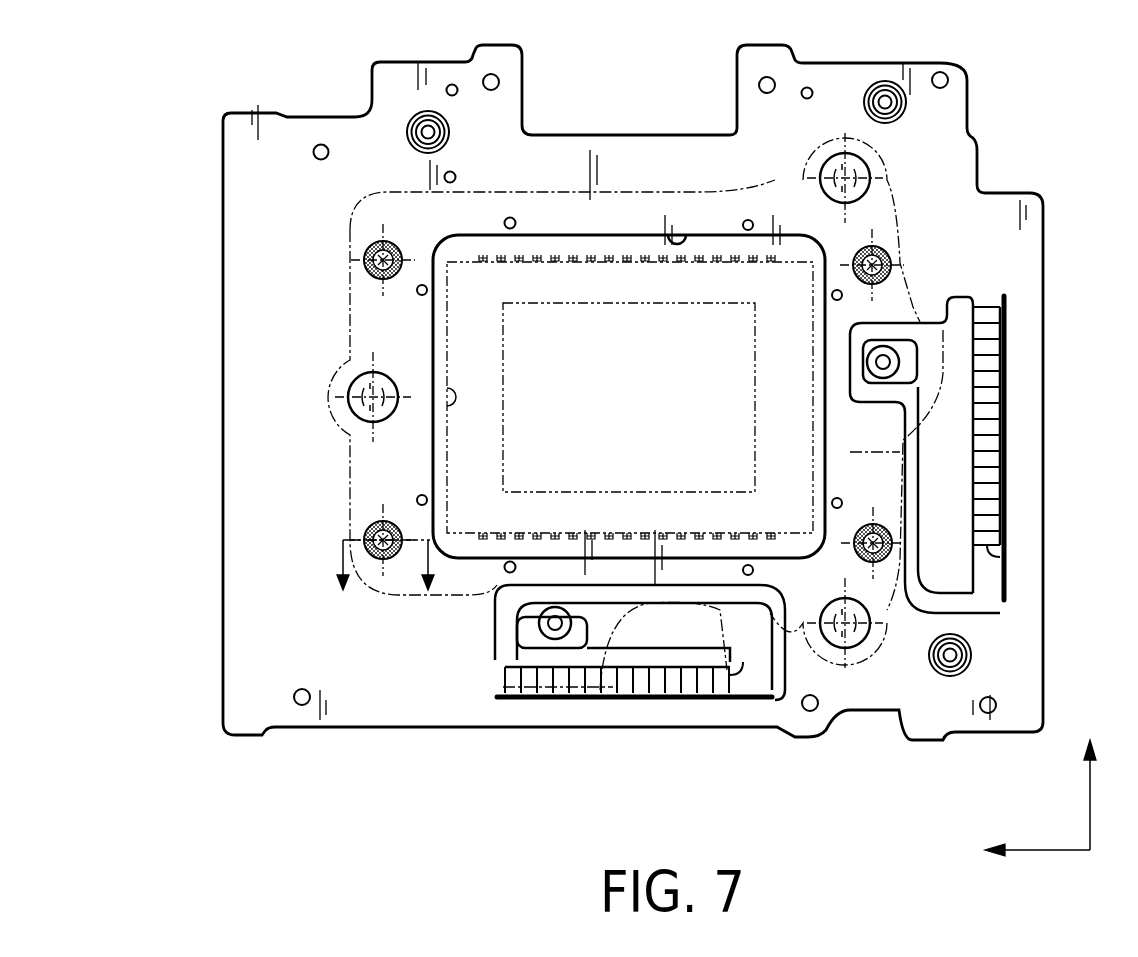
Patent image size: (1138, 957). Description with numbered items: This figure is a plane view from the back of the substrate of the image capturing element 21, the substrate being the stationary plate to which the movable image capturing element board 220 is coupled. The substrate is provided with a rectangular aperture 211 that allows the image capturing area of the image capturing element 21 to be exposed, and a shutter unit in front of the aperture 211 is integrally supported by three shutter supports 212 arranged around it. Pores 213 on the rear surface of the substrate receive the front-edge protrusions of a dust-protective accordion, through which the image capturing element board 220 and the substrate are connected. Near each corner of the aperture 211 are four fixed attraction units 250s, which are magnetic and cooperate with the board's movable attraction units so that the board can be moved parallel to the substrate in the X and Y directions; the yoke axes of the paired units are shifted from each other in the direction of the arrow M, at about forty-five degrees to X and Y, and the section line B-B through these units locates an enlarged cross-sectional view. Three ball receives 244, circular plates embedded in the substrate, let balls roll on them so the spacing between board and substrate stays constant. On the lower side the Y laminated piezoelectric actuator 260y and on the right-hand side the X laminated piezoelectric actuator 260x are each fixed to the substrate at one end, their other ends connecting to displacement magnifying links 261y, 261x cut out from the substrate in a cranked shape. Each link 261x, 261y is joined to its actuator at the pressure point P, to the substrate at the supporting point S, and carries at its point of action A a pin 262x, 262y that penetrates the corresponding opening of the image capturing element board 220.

The image capturing element 21 is at (620, 273).
The rectangular aperture 211 is at (683, 240).
The shutter supports 212 is at (420, 112).
The pores 213 is at (510, 218).
The image capturing element board 220 is at (400, 598).
The ball receive 244 is at (825, 180).
The fixed attraction units 250s is at (358, 276).
The X laminated piezoelectric actuator 260x is at (988, 448).
The displacement magnifying link 261x is at (993, 370).
The pin 262x is at (883, 355).
The Y laminated piezoelectric actuator 260y is at (613, 660).
The displacement magnifying link 261y is at (687, 630).
The pin 262y is at (567, 620).
The arrow M is at (362, 240).
The supporting point S is at (933, 316).
The pressure point P is at (1002, 548).
The point of action A is at (1008, 610).
The line B- B is at (386, 569).